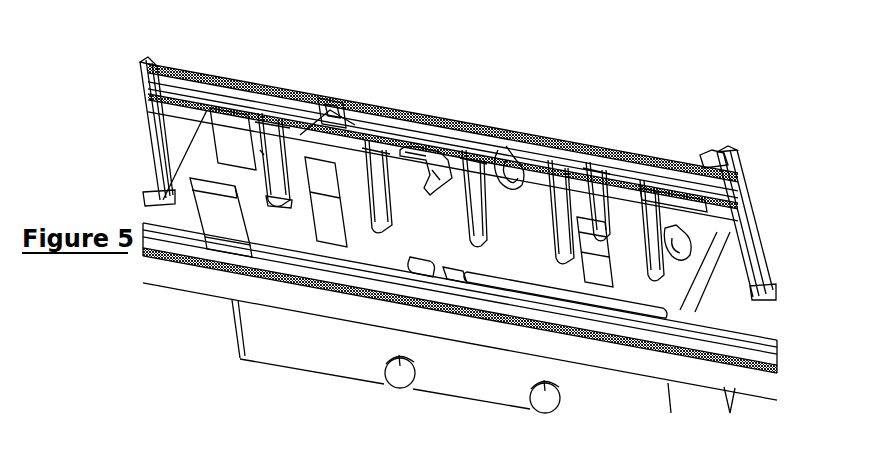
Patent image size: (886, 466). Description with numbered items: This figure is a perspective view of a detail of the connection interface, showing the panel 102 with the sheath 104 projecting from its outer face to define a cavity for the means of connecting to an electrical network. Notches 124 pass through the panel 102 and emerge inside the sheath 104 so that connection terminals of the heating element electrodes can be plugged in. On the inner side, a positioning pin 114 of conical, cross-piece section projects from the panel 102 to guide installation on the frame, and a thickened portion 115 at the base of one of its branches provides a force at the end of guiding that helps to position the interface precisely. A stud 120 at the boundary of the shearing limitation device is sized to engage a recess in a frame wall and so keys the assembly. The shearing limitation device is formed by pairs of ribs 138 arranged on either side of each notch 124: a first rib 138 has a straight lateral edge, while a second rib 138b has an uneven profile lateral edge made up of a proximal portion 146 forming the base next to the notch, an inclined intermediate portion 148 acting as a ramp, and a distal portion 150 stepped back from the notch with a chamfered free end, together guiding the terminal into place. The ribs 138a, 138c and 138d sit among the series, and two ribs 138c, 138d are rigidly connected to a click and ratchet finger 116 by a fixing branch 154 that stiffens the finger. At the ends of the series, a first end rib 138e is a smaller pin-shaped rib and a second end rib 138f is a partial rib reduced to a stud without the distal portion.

The panel 102 is at (460, 206).
The sheath 104 is at (507, 0).
The positioning pin 114 is at (160, 97).
The thickened portion 115 is at (767, 275).
The click and ratchet finger 116 is at (588, 238).
The stud 120 is at (722, 160).
The notch 124 is at (280, 200).
The rib 138 is at (268, 128).
The clip 138a is at (427, 177).
The second rib 138b is at (540, 197).
The rib 138c is at (353, 163).
The rib 138d is at (587, 187).
The first end rib 138e is at (268, 147).
The second end rib 138f is at (673, 253).
The proximal portion 146 is at (480, 220).
The intermediate portion 148 is at (473, 188).
The distal portion 150 is at (510, 190).
The fixing branch 154 is at (337, 120).